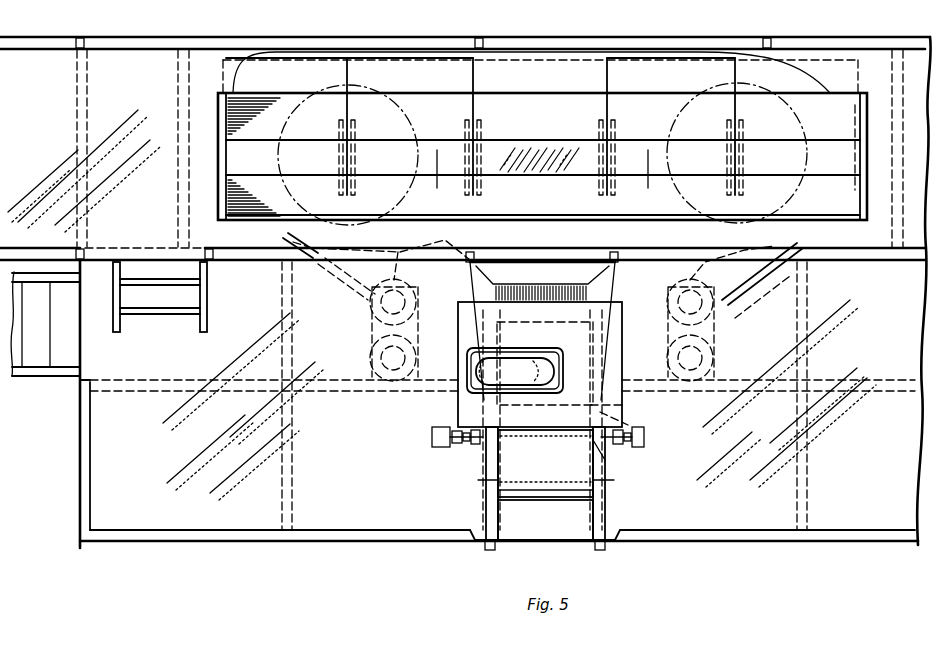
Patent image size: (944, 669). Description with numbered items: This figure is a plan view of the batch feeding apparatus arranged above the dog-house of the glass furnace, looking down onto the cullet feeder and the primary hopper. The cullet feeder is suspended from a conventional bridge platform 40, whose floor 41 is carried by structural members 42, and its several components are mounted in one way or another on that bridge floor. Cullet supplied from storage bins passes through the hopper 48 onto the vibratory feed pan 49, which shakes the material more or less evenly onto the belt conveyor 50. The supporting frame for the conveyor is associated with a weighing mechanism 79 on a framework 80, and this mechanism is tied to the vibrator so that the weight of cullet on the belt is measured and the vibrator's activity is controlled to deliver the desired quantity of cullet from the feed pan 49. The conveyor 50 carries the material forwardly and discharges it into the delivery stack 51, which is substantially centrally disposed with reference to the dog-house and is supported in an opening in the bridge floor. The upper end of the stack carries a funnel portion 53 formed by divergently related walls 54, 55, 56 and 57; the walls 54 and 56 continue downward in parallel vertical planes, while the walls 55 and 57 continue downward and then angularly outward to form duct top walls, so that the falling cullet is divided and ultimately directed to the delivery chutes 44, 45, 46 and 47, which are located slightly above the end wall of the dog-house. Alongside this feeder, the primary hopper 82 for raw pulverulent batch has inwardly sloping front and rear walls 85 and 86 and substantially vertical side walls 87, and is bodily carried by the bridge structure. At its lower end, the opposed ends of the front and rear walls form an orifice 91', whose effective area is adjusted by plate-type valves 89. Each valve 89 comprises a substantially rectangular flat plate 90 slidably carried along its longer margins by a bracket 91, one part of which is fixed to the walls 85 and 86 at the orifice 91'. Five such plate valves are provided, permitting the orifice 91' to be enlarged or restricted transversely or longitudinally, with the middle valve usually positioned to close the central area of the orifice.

The bridge platform 40 is at (118, 66).
The floor 41 is at (154, 82).
The structural members 42 is at (190, 66).
The delivery chute 44 is at (340, 270).
The delivery chute 45 is at (381, 302).
The delivery chute 46 is at (668, 250).
The delivery chute 47 is at (764, 274).
The hopper 48 is at (600, 450).
The vibratory feed pan 49 is at (522, 453).
The belt conveyor 50 is at (472, 329).
The delivery stack 51 is at (470, 256).
The funnel portion 53 is at (512, 280).
The wall 54 is at (630, 426).
The wall 55 is at (478, 292).
The wall 56 is at (550, 272).
The wall 57 is at (626, 297).
The weighing mechanism 79 is at (520, 370).
The framework 80 is at (473, 400).
The primary hopper 82 is at (286, 102).
The front wall 85 is at (262, 205).
The rear wall 86 is at (420, 104).
The side walls 87 is at (216, 157).
The plate-type valve 89 is at (369, 70).
The plate 90 is at (465, 71).
The bracket 91 is at (543, 161).
The orifice 91' is at (542, 176).